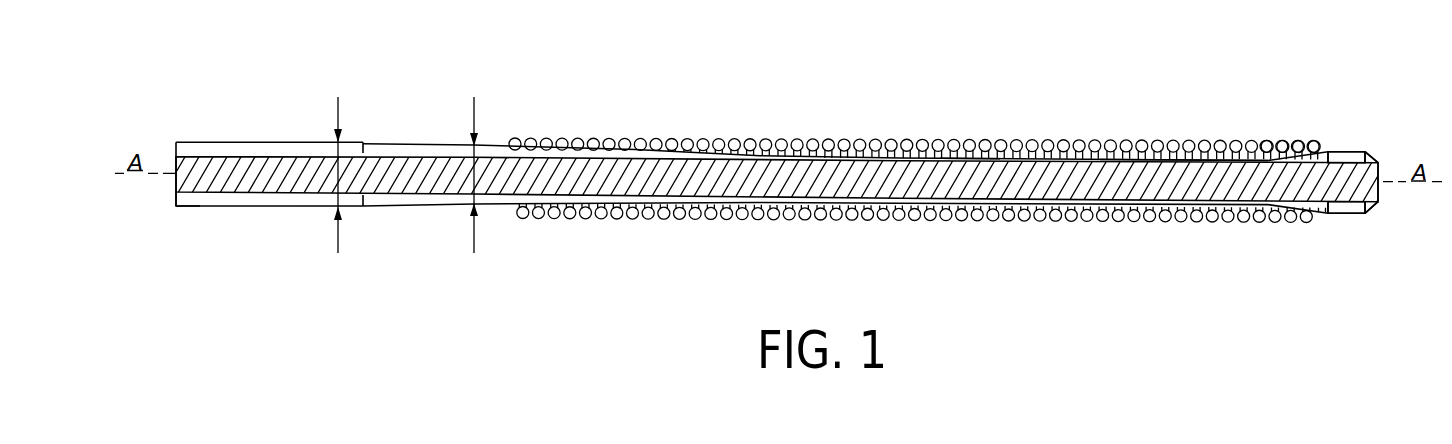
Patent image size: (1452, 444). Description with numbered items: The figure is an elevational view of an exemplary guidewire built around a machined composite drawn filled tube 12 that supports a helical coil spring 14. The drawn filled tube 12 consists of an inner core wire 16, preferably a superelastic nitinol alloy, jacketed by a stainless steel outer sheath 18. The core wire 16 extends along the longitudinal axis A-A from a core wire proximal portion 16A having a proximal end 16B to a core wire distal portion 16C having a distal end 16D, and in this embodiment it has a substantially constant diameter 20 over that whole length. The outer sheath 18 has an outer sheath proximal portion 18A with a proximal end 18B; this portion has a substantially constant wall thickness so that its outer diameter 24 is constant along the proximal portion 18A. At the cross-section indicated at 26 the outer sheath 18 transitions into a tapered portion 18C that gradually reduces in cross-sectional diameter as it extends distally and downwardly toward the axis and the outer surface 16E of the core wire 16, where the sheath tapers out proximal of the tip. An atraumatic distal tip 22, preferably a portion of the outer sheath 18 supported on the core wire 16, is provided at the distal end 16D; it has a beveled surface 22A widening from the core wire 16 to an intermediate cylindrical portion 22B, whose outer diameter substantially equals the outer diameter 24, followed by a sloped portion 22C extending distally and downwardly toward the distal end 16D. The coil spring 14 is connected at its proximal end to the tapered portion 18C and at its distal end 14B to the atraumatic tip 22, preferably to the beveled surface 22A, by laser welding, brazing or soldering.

The drawn filled tube 12 is at (416, 118).
The coil spring 14 is at (977, 217).
The distal end of coil spring 14B is at (1250, 146).
The core wire 16 is at (818, 168).
The core wire proximal portion 16A is at (323, 195).
The core wire proximal end 16B is at (176, 172).
The core wire distal portion 16C is at (1150, 162).
The core wire distal end 16D is at (1379, 196).
The outer surface of core wire 16E is at (968, 156).
The outer sheath 18 is at (263, 198).
The outer sheath proximal portion 18A is at (270, 150).
The outer sheath proximal end 18B is at (175, 200).
The tapered portion 18C is at (580, 197).
The core wire diameter 20 is at (492, 172).
The atraumatic distal tip 22 is at (1313, 100).
The beveled surface 22A is at (1318, 204).
The intermediate cylindrical portion 22B is at (1343, 155).
The sloped portion 22C is at (1370, 154).
The outer diameter of outer sheath 24 is at (355, 213).
The cross-section of transition 26 is at (364, 152).